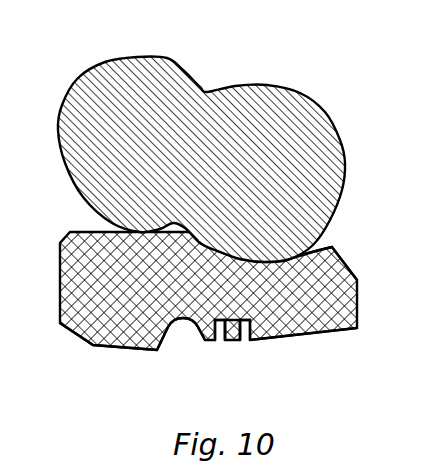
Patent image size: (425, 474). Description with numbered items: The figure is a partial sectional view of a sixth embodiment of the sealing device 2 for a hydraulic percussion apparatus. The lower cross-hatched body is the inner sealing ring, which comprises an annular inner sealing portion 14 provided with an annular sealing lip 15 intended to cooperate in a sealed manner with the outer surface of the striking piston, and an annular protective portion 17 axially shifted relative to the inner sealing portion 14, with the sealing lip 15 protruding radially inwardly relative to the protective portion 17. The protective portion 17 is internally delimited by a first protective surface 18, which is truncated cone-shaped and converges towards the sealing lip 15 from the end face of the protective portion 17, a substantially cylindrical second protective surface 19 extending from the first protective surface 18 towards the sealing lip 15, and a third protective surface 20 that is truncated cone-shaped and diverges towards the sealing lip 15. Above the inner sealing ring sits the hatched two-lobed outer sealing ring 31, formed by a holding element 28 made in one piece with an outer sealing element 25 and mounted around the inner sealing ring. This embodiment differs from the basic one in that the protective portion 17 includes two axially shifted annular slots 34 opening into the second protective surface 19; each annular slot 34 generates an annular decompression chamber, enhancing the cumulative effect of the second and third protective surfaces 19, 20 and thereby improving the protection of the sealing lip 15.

The sealing device 2 is at (220, 143).
The inner sealing portion 14 is at (85, 288).
The sealing lip 15 is at (132, 350).
The protective portion 17 is at (323, 278).
The first protective surface 18 is at (330, 333).
The second protective surface 19 is at (232, 341).
The third protective surface 20 is at (190, 340).
The outer sealing element 25 is at (137, 82).
The holding element 28 is at (283, 117).
The outer sealing ring 31 is at (197, 219).
The annular slot 34 is at (218, 345).